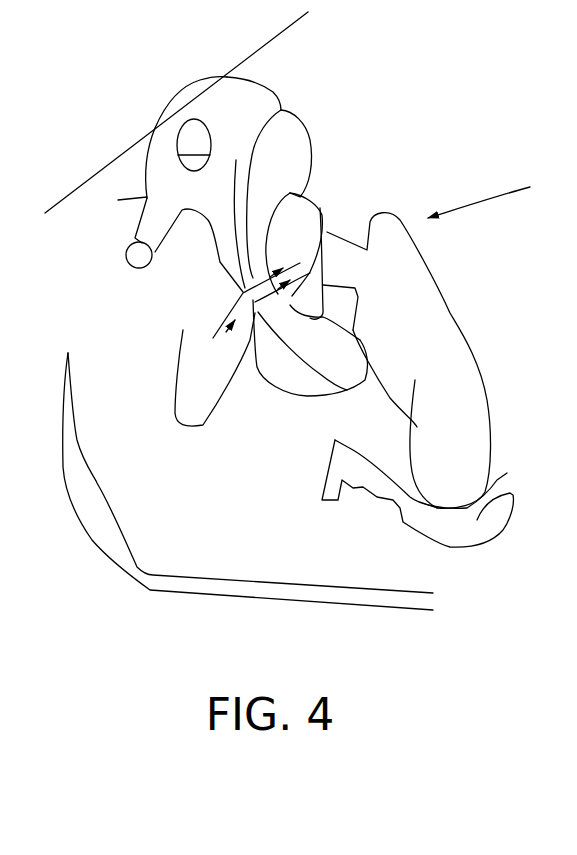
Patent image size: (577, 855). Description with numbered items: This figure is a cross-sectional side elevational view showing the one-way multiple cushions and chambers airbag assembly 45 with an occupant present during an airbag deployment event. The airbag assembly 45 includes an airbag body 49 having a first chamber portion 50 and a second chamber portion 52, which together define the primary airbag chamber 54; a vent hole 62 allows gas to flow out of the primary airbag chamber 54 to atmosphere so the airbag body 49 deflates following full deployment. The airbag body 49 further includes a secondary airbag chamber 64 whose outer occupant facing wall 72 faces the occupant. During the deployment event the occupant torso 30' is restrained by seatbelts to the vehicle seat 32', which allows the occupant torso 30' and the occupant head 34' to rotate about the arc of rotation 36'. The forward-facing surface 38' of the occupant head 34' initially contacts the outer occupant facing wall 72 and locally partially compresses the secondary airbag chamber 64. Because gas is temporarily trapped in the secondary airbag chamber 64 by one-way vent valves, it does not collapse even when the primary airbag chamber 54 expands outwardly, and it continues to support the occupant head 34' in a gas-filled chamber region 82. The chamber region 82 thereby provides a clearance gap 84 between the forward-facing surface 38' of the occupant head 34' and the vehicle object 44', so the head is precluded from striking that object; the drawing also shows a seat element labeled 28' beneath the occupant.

The seat base 28' is at (234, 481).
The occupant torso 30' is at (420, 361).
The vehicle seat 32' is at (431, 493).
The occupant head 34' is at (319, 227).
The arc of rotation 36' is at (478, 190).
The forward-facing surface 38' is at (239, 300).
The vehicle object 44' is at (242, 349).
The one-way multiple cushions and chambers airbag assembly 45 is at (160, 107).
The airbag body 49 is at (186, 115).
The first chamber portion 50 is at (212, 110).
The second chamber portion 52 is at (307, 378).
The primary airbag chamber 54 is at (255, 95).
The vent hole 62 is at (194, 145).
The secondary airbag chamber 64 is at (310, 123).
The outer occupant facing wall 72 is at (322, 233).
The chamber region 82 is at (238, 203).
The clearance gap 84 is at (318, 210).